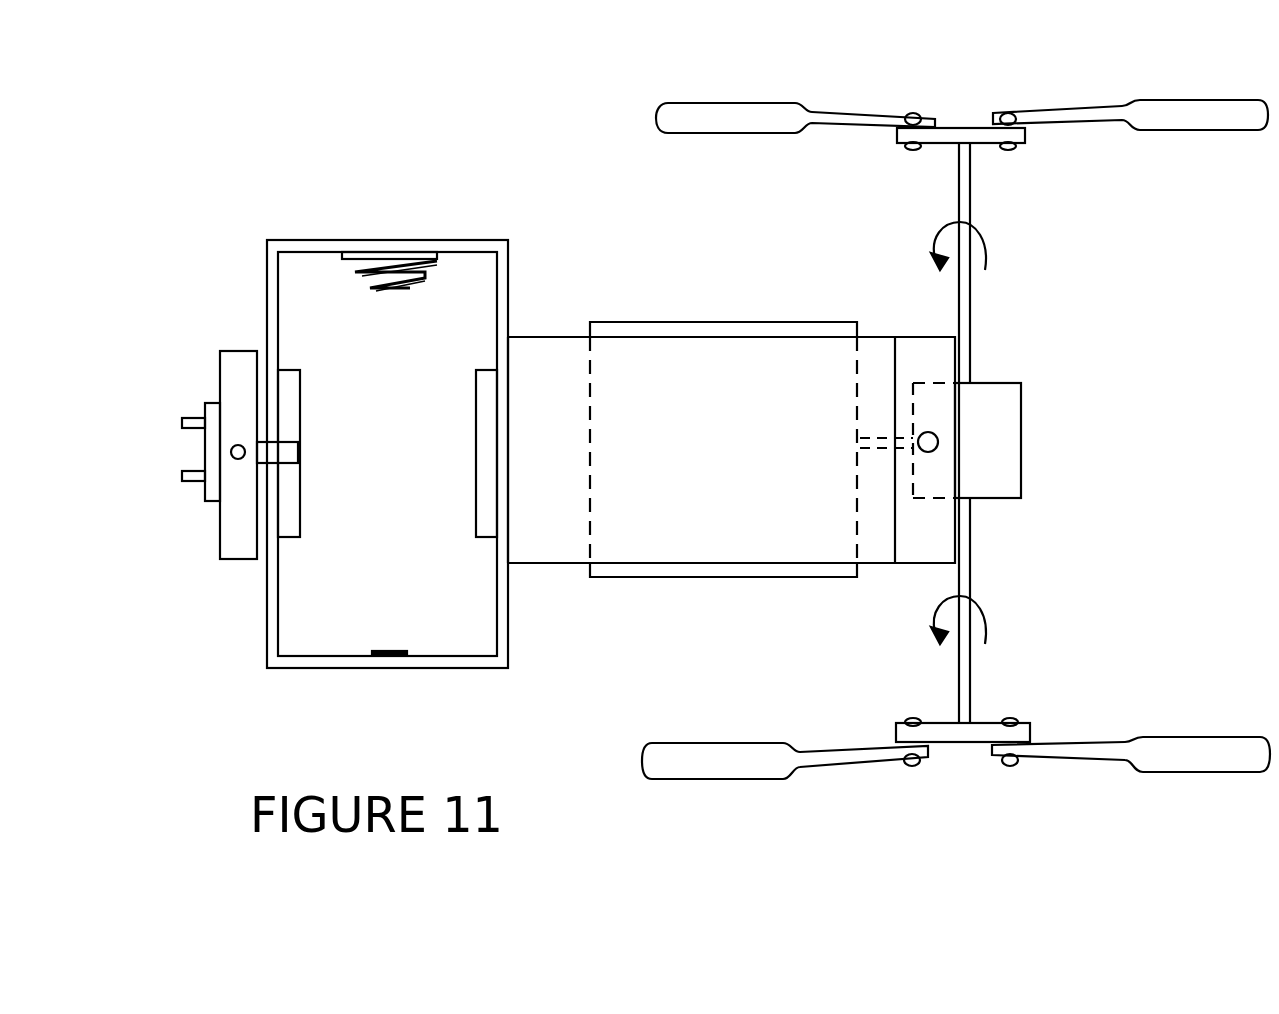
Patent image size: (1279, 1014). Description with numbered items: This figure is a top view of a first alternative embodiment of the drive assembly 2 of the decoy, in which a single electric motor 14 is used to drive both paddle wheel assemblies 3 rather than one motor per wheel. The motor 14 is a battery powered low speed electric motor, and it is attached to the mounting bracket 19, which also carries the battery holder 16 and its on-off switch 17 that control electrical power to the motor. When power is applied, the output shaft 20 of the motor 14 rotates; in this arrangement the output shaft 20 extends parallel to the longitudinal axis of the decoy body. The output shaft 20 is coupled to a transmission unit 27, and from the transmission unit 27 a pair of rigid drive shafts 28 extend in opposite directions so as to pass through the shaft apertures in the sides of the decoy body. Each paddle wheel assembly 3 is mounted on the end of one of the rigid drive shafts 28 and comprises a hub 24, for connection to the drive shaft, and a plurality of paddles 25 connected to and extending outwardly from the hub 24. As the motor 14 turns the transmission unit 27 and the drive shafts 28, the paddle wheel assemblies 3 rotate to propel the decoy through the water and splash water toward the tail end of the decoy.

The drive assembly 2 is at (700, 597).
The paddle wheel assembly 3 is at (958, 105).
The electric motor 14 is at (668, 330).
The battery holder 16 is at (453, 247).
The on-off switch 17 is at (235, 382).
The mounting bracket 19 is at (552, 353).
The output shaft 20 is at (880, 442).
The hub 24 is at (943, 128).
The paddles 25 is at (695, 116).
The transmission unit 27 is at (990, 418).
The rigid drive shaft 28 is at (966, 172).